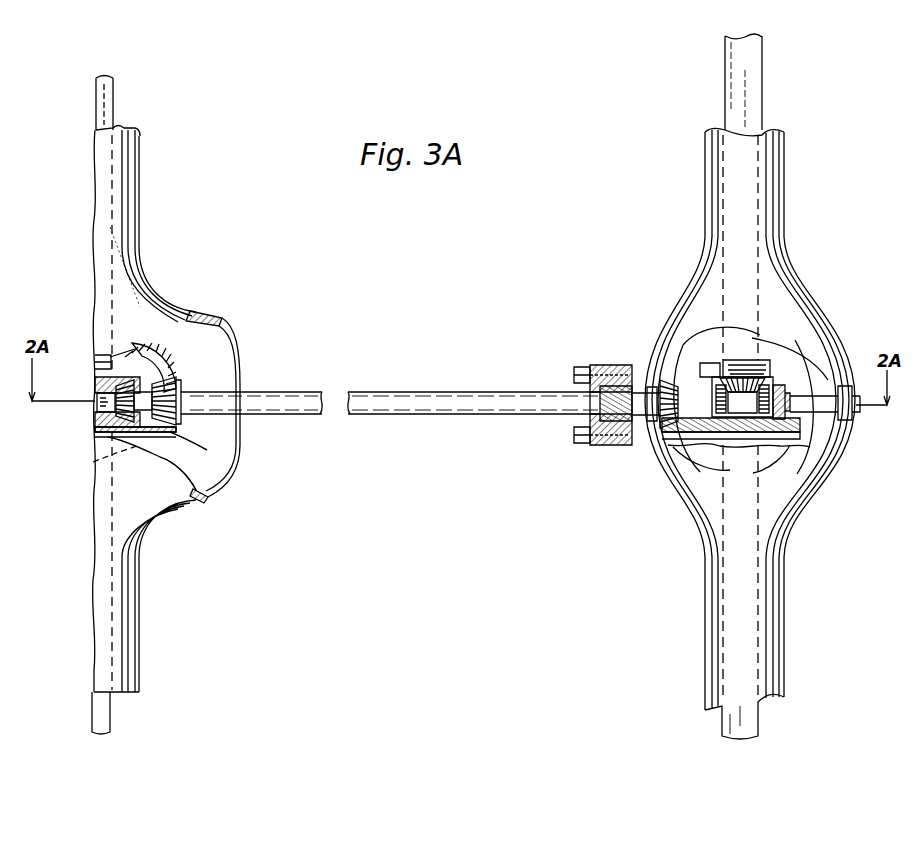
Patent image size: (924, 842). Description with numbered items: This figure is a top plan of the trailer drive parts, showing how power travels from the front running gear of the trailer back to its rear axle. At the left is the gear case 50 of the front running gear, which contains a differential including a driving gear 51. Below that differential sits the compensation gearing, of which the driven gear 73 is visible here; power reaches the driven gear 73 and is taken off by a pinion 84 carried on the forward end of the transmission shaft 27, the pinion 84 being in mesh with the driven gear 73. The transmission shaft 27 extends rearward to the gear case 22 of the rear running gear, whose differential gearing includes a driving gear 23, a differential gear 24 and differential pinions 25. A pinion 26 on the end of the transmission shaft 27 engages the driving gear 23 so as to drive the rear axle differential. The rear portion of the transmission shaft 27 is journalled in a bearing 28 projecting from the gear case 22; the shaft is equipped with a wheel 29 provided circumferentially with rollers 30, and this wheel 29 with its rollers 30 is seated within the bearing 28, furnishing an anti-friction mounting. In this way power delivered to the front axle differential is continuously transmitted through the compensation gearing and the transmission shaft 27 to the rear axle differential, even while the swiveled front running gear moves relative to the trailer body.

The gear case 22 is at (777, 323).
The driving gear 23 is at (678, 433).
The differential gear 24 is at (765, 373).
The differential pinions 25 is at (703, 372).
The pinion 26 is at (672, 377).
The transmission shaft 27 is at (318, 415).
The bearing 28 is at (592, 443).
The wheel 29 is at (778, 390).
The rollers 30 is at (602, 393).
The gear case 50 is at (163, 513).
The driving gear 51 is at (207, 450).
The driven gear 73 is at (140, 347).
The pinion 84 is at (185, 388).